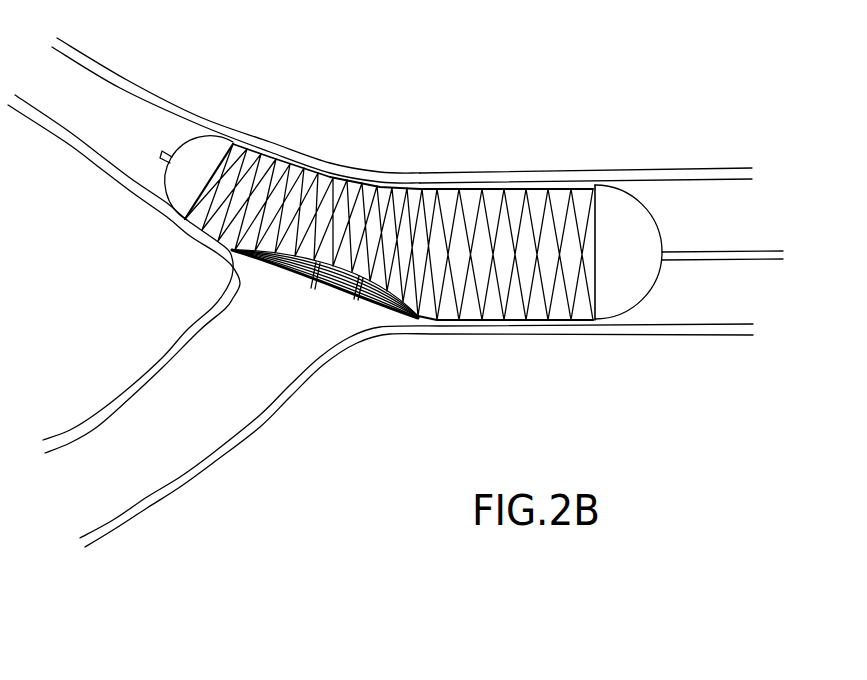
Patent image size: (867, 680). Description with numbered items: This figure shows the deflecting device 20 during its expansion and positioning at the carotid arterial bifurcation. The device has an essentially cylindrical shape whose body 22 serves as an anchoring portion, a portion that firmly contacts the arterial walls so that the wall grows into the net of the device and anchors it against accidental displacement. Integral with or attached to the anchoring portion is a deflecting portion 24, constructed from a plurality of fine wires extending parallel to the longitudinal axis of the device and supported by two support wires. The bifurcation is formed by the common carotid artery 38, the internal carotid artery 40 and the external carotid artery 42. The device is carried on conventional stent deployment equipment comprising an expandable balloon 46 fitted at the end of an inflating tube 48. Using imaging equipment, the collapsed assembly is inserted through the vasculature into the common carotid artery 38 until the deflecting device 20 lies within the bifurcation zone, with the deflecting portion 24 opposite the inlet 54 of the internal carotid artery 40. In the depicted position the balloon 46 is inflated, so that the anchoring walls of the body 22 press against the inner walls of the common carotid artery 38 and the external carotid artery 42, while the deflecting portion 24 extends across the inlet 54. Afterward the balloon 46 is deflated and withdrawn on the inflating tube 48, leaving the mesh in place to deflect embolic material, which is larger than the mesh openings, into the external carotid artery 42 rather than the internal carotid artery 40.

The deflecting device 20 is at (487, 207).
The body 22 is at (417, 187).
The deflecting portion 24 is at (336, 302).
The common carotid artery 38 is at (690, 168).
The internal carotid artery 40 is at (187, 482).
The external carotid artery 42 is at (125, 82).
The expandable balloon 46 is at (623, 223).
The inflating tube 48 is at (717, 253).
The inlet 54 is at (282, 318).